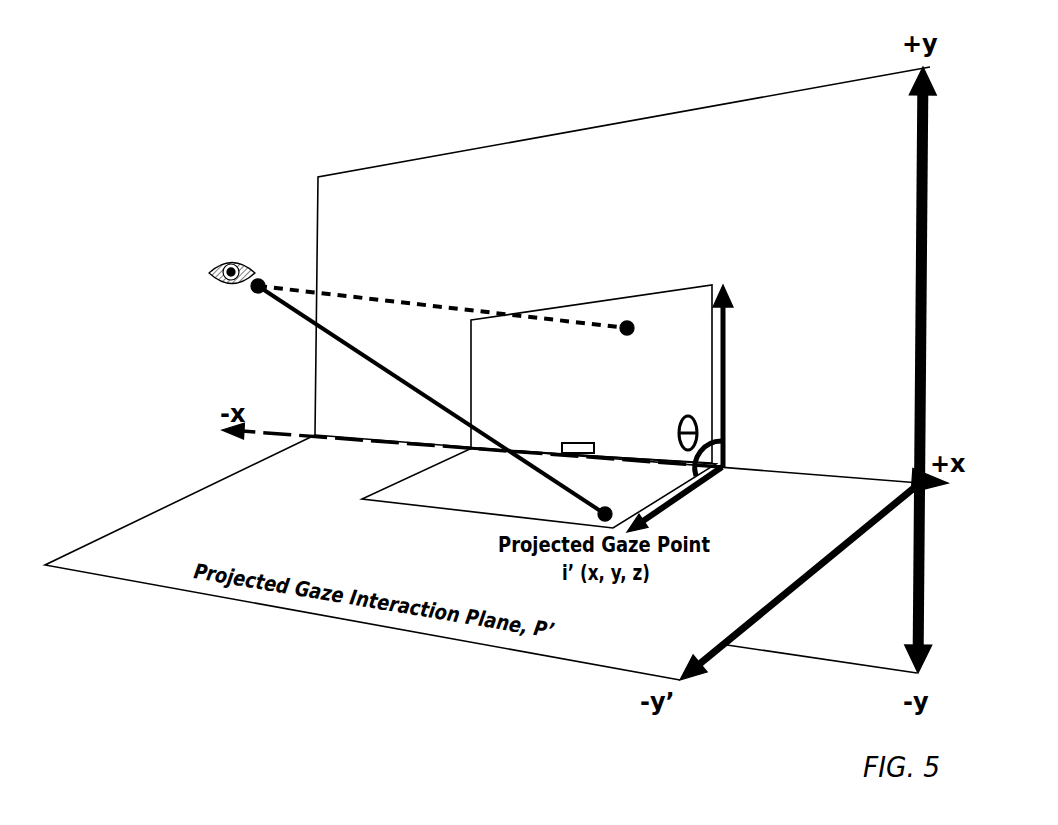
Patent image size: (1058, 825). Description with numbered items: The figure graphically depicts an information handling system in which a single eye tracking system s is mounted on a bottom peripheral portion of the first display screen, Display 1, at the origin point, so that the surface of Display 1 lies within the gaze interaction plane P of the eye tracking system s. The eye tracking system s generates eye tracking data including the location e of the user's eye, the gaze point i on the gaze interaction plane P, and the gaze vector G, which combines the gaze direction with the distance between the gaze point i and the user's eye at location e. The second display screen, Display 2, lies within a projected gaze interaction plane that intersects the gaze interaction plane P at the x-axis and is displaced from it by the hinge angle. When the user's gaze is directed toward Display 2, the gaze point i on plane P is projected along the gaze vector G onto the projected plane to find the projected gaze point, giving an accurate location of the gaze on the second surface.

The gaze interaction plane P is at (622, 251).
The Display 1 is at (591, 374).
The Display 2 is at (539, 488).
The eye tracking system s is at (576, 433).
The location of the user's eye e is at (214, 295).
The gaze vector G is at (442, 393).
The gaze point i is at (640, 297).